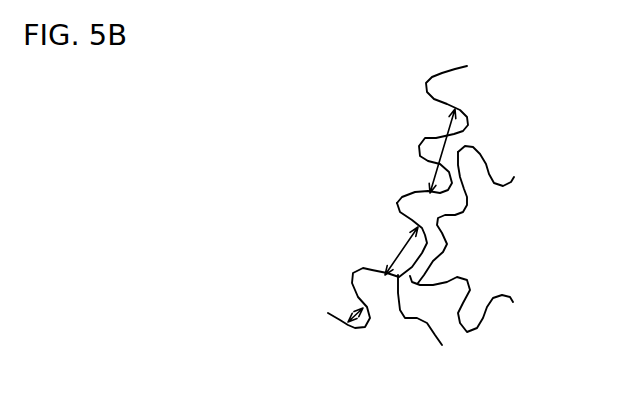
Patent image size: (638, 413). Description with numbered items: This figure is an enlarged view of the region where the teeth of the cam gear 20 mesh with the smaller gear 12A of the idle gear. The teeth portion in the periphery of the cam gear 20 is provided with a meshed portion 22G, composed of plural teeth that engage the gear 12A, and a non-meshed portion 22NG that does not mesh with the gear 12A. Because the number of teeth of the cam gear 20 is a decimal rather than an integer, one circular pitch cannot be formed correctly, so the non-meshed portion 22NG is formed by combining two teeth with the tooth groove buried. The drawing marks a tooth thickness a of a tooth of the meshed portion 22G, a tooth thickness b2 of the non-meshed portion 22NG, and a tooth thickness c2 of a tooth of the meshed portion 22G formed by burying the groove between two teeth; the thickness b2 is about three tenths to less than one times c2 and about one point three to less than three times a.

The cam gear 20 is at (363, 186).
The gear 12A is at (516, 256).
The meshed portion 22G is at (465, 112).
The non-meshed portion 22NG is at (440, 326).
The tooth thickness a is at (360, 313).
The tooth thickness b2 is at (400, 249).
The tooth thickness c2 is at (445, 157).